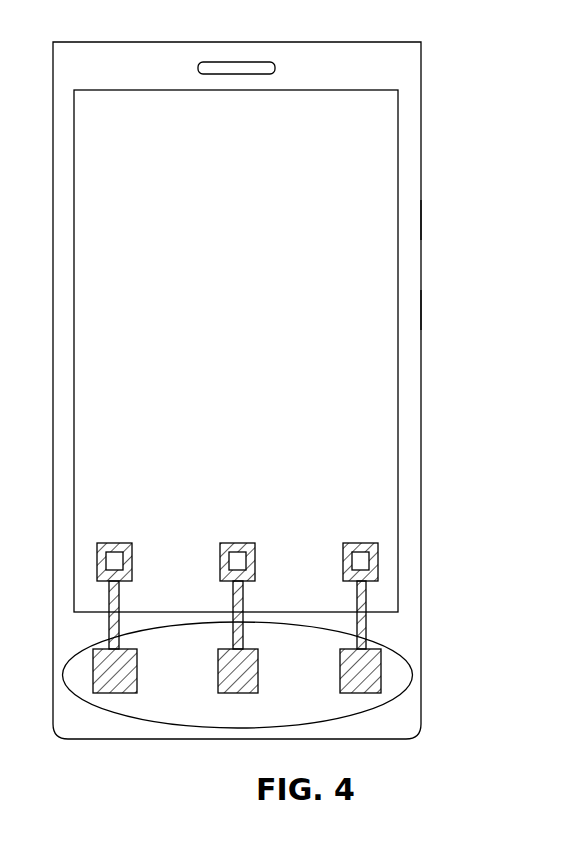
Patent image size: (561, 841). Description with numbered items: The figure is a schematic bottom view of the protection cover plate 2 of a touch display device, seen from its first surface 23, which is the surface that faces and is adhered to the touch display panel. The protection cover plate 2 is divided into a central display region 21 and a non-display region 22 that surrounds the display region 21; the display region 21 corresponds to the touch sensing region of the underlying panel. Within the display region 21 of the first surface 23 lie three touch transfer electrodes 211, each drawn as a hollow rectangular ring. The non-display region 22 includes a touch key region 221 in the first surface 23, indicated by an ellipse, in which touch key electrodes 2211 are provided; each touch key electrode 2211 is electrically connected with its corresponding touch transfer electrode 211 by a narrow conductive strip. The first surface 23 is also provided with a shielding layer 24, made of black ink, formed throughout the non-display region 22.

The protection cover plate 2 is at (422, 83).
The display region 21 is at (375, 422).
The touch transfer electrode 211 is at (370, 553).
The non-display region 22 is at (398, 632).
The touch key region 221 is at (412, 670).
The touch key electrode 2211 is at (385, 687).
The first surface 23 is at (412, 213).
The shielding layer 24 is at (412, 300).